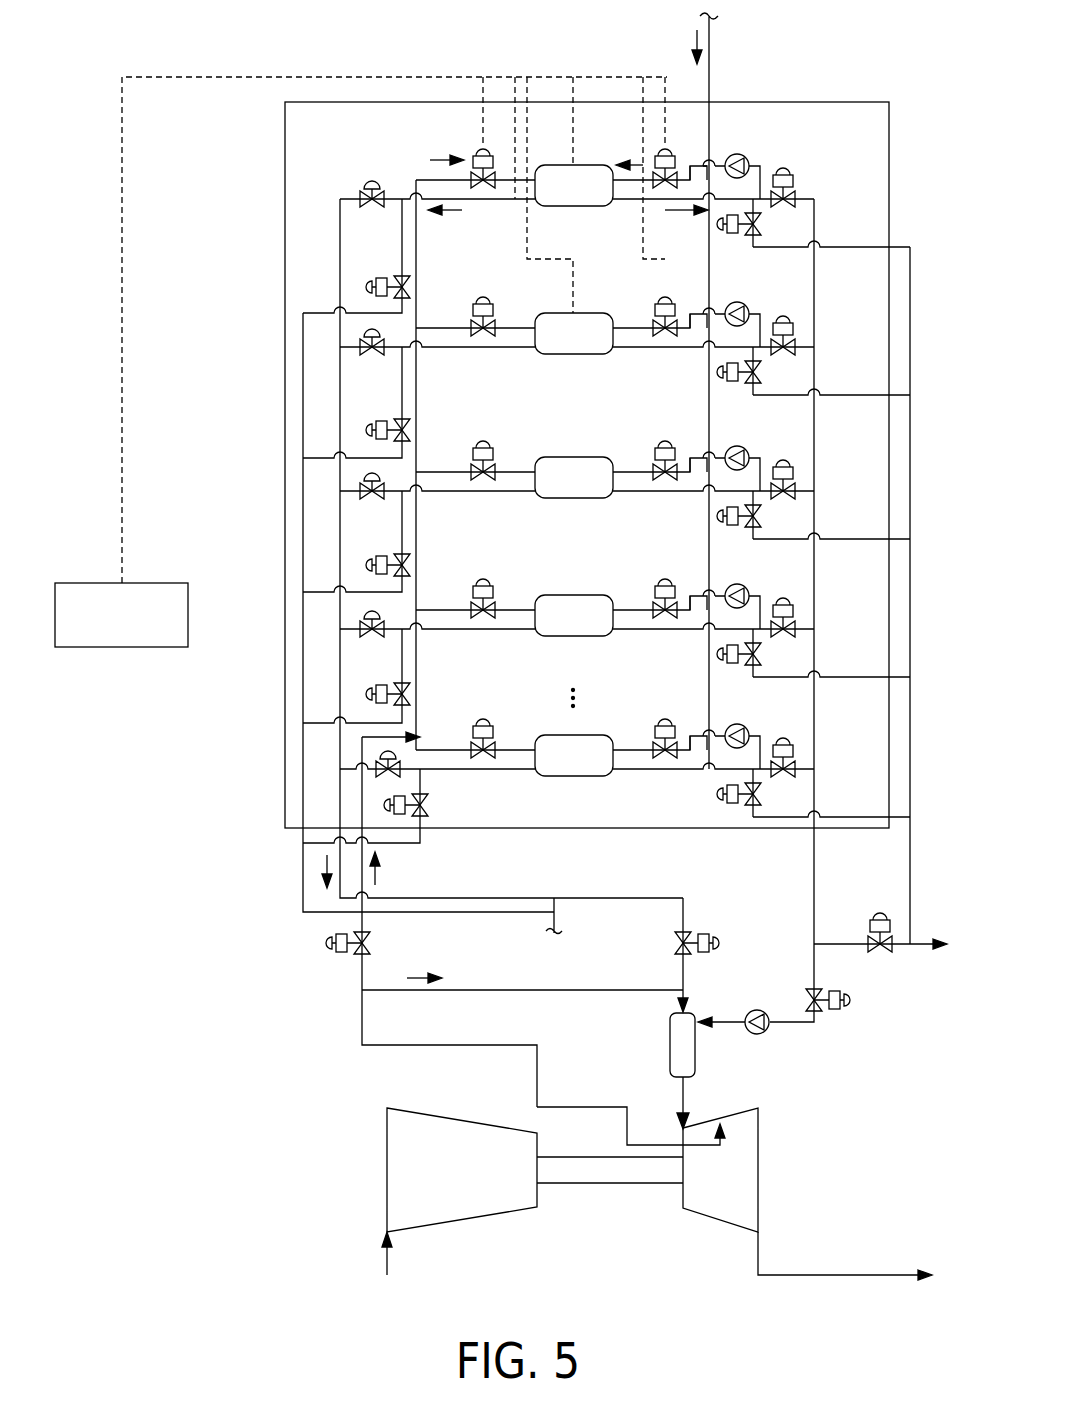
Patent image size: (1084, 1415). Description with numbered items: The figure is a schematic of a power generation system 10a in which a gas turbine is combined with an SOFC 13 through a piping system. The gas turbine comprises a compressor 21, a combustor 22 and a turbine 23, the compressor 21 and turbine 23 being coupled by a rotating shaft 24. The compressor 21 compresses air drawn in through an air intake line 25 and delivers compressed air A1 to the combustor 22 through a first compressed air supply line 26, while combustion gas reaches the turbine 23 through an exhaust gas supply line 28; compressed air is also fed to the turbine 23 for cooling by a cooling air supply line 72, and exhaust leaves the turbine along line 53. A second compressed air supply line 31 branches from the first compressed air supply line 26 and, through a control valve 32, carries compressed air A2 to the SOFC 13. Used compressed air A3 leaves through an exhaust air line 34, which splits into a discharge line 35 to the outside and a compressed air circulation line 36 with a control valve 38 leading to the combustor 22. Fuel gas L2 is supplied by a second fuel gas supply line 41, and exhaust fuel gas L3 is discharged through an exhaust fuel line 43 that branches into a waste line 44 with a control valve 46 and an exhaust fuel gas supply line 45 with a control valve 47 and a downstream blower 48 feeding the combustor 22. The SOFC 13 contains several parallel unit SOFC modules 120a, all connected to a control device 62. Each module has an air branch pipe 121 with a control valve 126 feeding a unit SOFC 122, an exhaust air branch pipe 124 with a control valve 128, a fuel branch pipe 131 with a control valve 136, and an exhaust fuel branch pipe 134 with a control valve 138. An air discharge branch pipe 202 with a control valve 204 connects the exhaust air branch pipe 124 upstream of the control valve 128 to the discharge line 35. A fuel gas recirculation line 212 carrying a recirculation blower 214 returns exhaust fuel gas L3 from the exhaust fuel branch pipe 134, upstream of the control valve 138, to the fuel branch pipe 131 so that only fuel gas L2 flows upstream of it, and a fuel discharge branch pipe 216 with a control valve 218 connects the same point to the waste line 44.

The power generation system 10a is at (258, 60).
The SOFC 13 is at (400, 102).
The compressor 21 is at (462, 1220).
The combustor 22 is at (697, 1055).
The turbine 23 is at (717, 1220).
The rotating shaft 24 is at (596, 1184).
The air intake line 25 is at (387, 1260).
The first compressed air supply line 26 is at (411, 991).
The exhaust gas supply line 28 is at (687, 1085).
The second compressed air supply line 31 is at (362, 990).
The control valve 32 is at (306, 947).
The exhaust air line 34 is at (525, 897).
The discharge line 35 is at (560, 914).
The compressed air circulation line 36 is at (632, 898).
The control valve 38 is at (738, 937).
The second fuel gas supply line 41 is at (709, 35).
The exhaust fuel line 43 is at (814, 840).
The waste line 44 is at (833, 943).
The exhaust fuel gas supply line 45 is at (814, 965).
The control valve 46 is at (880, 908).
The control valve 47 is at (850, 1000).
The blower 48 is at (757, 1009).
The exhaust line 53 is at (760, 1246).
The control device 62 is at (82, 583).
The cooling air supply line 72 is at (578, 1106).
The unit SOFC module 120a is at (312, 766).
The air branch pipe 121 is at (416, 178).
The unit SOFC 122 is at (565, 165).
The exhaust air branch pipe 124 is at (336, 310).
The control valve 126 is at (483, 144).
The control valve 128 is at (372, 181).
The fuel branch pipe 131 is at (690, 175).
The exhaust fuel branch pipe 134 is at (796, 197).
The control valve 136 is at (665, 144).
The control valve 138 is at (783, 164).
The air discharge branch pipe 202 is at (400, 778).
The control valve 204 is at (383, 805).
The fuel gas recirculation line 212 is at (700, 165).
The recirculation blower 214 is at (737, 724).
The fuel discharge branch pipe 216 is at (855, 817).
The control valve 218 is at (716, 224).
The fuel gas L2 is at (697, 42).
The exhaust fuel gas L3 is at (665, 210).
The compressed air A1 is at (418, 976).
The compressed air A2 is at (440, 160).
The compressed air A3 is at (458, 212).